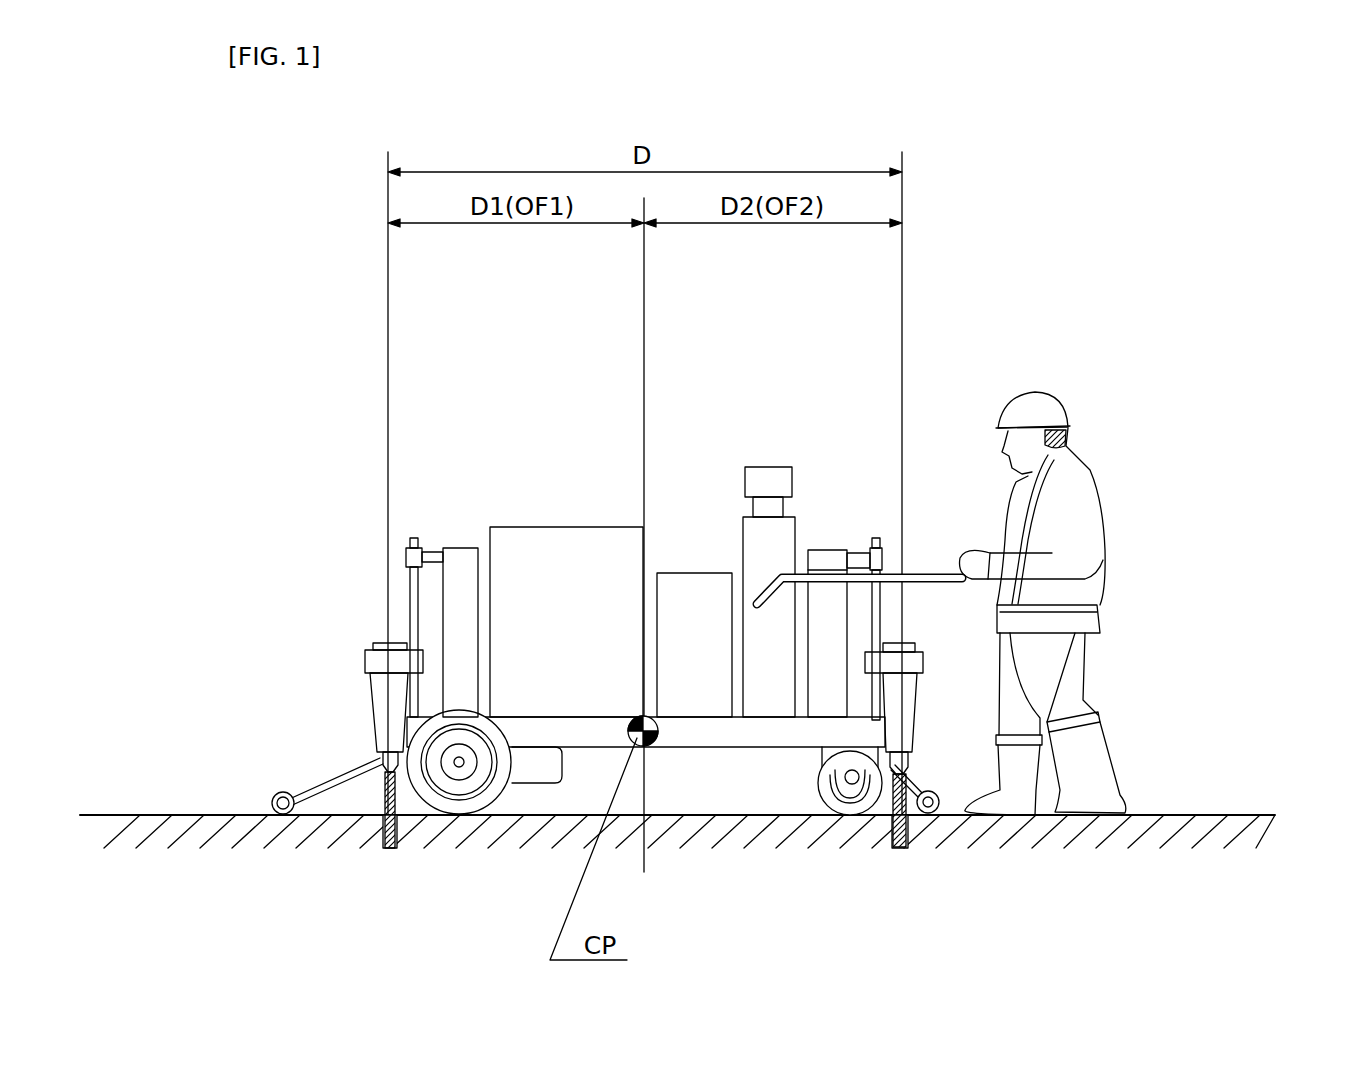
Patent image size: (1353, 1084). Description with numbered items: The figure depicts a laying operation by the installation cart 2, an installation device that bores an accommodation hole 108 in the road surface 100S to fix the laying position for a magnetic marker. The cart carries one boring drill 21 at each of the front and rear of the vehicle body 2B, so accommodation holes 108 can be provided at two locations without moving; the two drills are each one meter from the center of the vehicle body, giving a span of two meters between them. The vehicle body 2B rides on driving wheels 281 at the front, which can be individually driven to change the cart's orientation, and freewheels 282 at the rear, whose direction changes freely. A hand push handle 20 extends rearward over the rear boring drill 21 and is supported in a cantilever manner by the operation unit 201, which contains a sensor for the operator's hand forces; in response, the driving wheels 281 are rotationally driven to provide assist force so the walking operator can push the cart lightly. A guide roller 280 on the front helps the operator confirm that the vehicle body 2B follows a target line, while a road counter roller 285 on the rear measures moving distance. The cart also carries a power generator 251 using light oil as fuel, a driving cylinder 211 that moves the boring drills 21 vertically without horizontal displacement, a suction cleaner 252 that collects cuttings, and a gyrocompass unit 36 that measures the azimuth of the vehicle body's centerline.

The installation cart 2 is at (1017, 297).
The hand push handle 20 is at (920, 578).
The boring drill 21 is at (383, 695).
The gyrocompass unit 36 is at (768, 467).
The road surface 100S is at (230, 813).
The accommodation hole 108 is at (382, 847).
The operation unit 201 is at (785, 542).
The driving cylinder 211 is at (472, 560).
The power generator 251 is at (567, 540).
The suction cleaner 252 is at (693, 585).
The guide roller 280 is at (292, 817).
The driving wheel 281 is at (467, 805).
The freewheel 282 is at (835, 803).
The road counter roller 285 is at (948, 810).
The vehicle body 2B is at (738, 737).